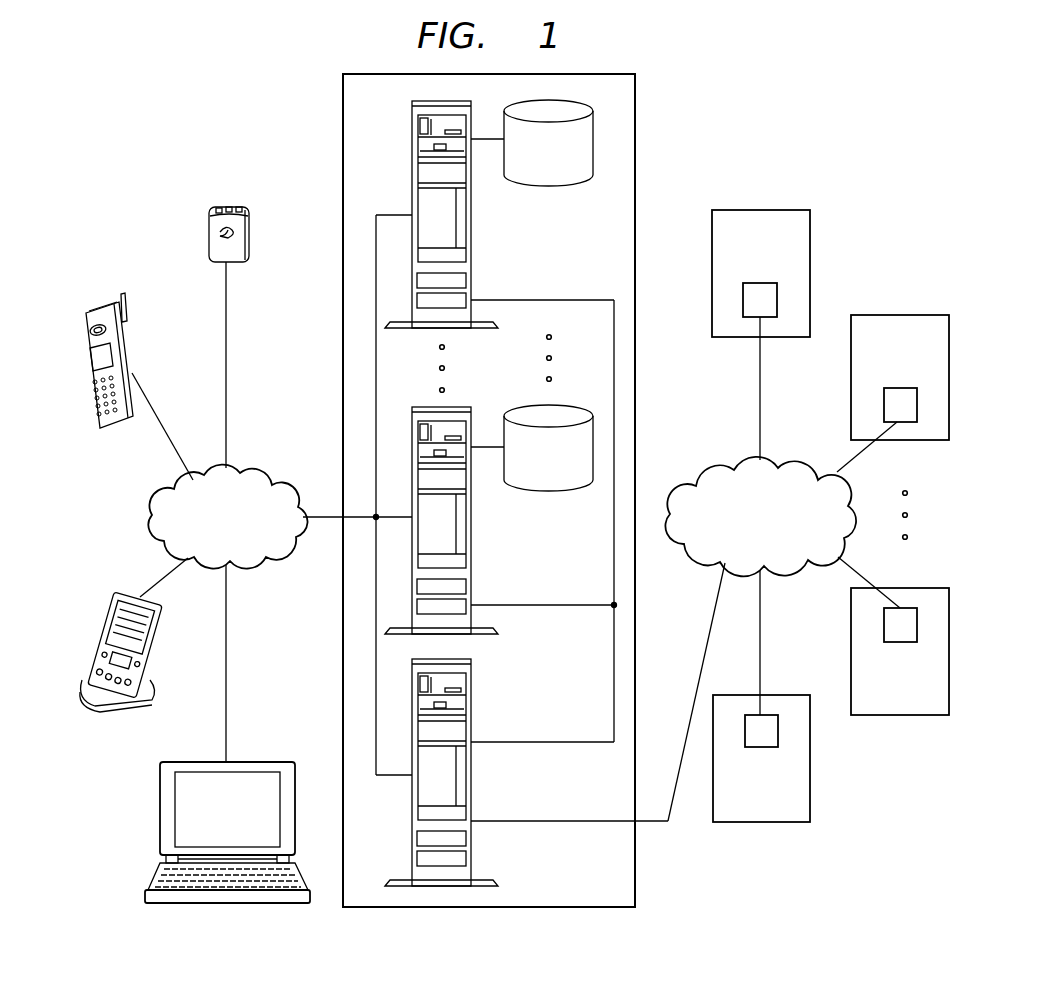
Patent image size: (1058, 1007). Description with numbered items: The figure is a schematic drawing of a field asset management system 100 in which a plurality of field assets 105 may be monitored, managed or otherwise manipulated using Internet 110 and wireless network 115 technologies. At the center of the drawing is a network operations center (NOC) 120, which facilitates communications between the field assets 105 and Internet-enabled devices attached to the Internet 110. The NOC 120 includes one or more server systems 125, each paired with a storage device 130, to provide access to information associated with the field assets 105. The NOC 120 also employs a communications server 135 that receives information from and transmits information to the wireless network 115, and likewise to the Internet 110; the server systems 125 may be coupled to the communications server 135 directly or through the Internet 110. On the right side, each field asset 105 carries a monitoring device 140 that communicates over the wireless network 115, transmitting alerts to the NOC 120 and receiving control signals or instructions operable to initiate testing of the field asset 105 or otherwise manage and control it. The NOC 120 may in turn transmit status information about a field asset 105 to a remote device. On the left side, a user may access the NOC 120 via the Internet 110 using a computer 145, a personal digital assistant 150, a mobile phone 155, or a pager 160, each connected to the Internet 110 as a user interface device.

The system 100 is at (812, 125).
The field asset 105 is at (760, 210).
The Internet 110 is at (151, 515).
The wireless network 115 is at (728, 461).
The network operations center 120 is at (343, 295).
The server system 125 is at (471, 213).
The storage device 130 is at (570, 157).
The communications server 135 is at (471, 773).
The monitoring device 140 is at (761, 283).
The computer 145 is at (160, 808).
The personal digital assistant 150 is at (108, 708).
The mobile phone 155 is at (103, 298).
The pager 160 is at (227, 206).